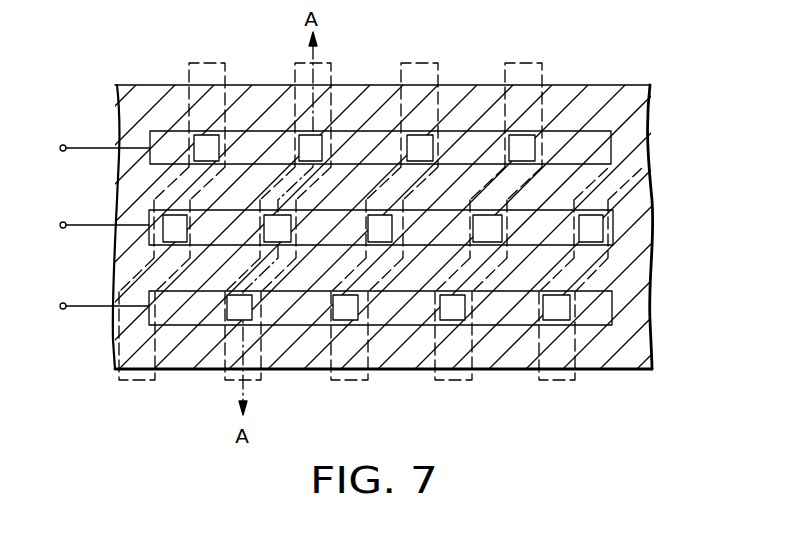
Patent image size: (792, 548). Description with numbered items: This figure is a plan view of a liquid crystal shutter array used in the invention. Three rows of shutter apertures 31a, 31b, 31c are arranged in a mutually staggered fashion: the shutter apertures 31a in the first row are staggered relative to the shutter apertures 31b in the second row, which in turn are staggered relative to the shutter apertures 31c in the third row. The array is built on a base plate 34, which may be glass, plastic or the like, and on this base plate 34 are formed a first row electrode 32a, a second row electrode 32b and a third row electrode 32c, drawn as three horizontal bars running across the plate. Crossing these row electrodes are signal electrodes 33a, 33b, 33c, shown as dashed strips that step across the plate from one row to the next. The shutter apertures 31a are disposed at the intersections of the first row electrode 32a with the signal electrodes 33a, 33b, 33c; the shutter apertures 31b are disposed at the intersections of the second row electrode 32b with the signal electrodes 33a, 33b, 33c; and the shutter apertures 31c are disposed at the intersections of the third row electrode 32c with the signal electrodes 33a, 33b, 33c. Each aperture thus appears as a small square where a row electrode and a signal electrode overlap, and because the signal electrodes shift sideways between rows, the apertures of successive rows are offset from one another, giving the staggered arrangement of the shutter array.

The shutter apertures 31a is at (203, 144).
The shutter apertures 31b is at (165, 232).
The shutter apertures 31c is at (228, 315).
The first row electrode 32a is at (609, 148).
The second row electrode 32b is at (607, 227).
The third row electrode 32c is at (613, 307).
The signal electrode 33a is at (460, 380).
The signal electrode 33b is at (356, 380).
The signal electrode 33c is at (258, 378).
The base plate 34 is at (652, 357).